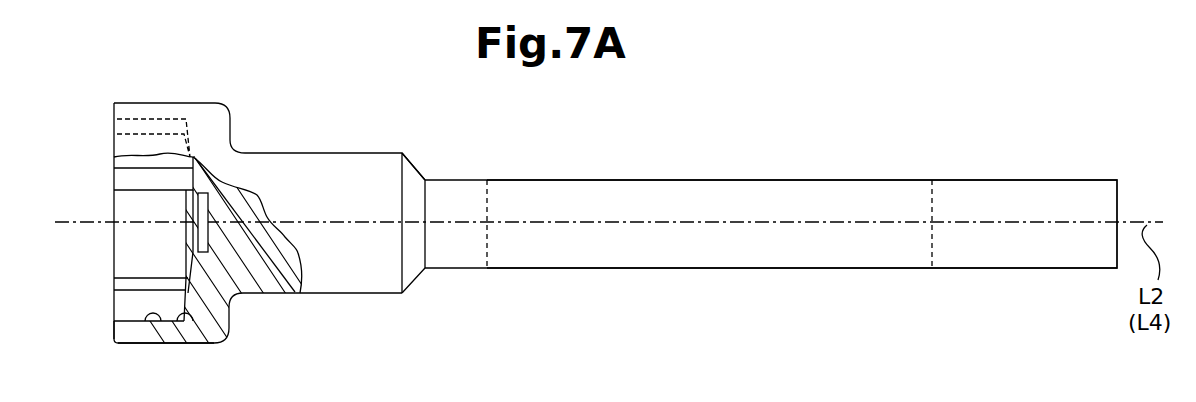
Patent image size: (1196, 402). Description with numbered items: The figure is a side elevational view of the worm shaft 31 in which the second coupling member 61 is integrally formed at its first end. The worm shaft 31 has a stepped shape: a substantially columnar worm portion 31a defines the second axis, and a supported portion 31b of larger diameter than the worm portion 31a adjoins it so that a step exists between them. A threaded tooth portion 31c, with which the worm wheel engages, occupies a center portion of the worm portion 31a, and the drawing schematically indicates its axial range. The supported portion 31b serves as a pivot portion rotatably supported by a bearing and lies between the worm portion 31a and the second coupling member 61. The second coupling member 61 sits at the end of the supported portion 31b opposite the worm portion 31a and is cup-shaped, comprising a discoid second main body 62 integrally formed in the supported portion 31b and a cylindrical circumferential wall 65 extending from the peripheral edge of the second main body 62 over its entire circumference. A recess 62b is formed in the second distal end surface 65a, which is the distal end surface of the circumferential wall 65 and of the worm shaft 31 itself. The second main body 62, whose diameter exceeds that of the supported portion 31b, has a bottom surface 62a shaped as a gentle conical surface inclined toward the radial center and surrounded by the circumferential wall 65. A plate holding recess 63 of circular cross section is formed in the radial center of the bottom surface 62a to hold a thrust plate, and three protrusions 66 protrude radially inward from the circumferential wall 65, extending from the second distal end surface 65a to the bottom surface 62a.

The second coupling member 61 is at (201, 90).
The protrusions 66 is at (120, 178).
The second main body 62 is at (226, 320).
The bottom surface 62a is at (187, 326).
The recess 62b is at (151, 326).
The plate holding recess 63 is at (206, 233).
The circumferential wall 65 is at (125, 345).
The second distal end surface 65a is at (118, 338).
The worm shaft 31 is at (1020, 152).
The worm portion 31a is at (986, 270).
The supported portion 31b is at (355, 294).
The threaded tooth portion 31c is at (684, 270).